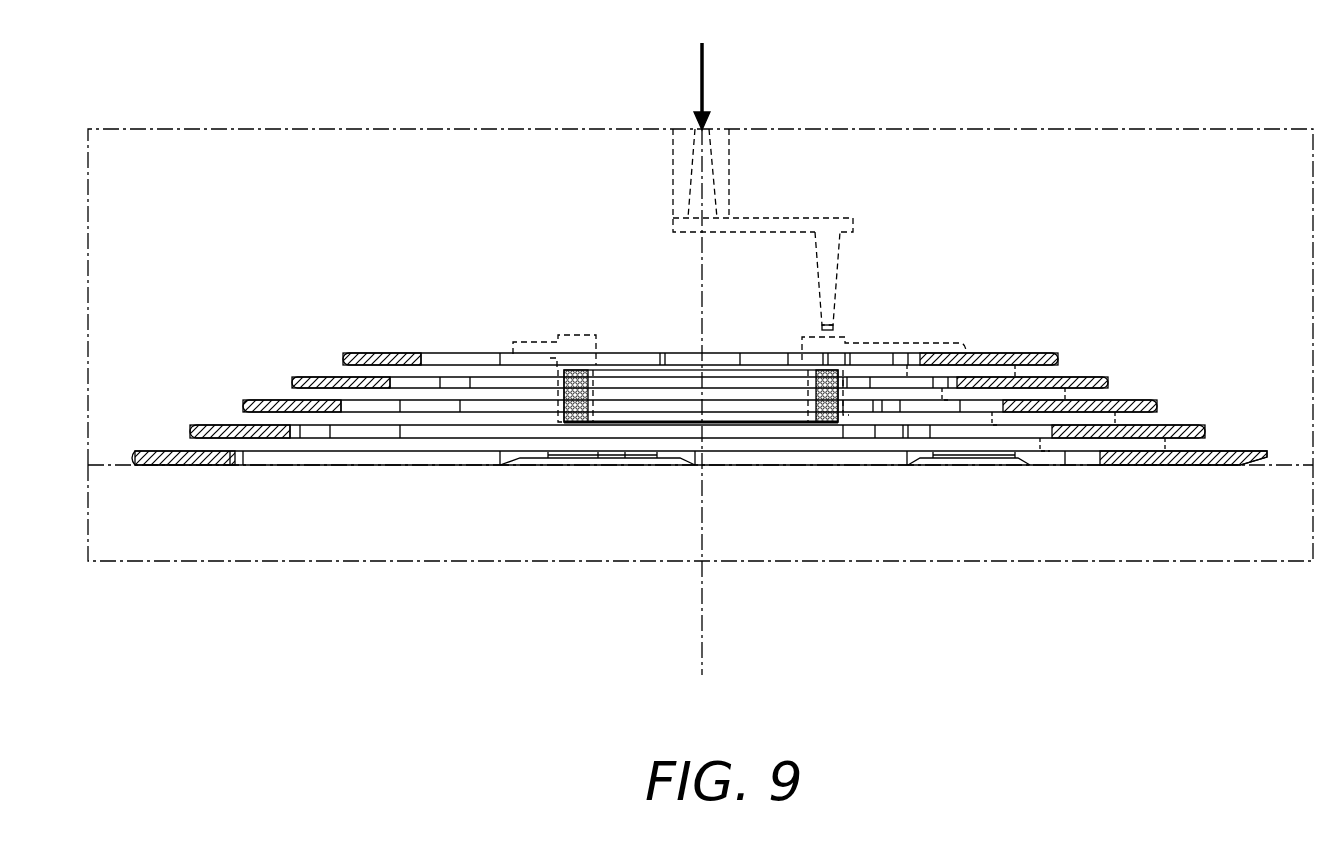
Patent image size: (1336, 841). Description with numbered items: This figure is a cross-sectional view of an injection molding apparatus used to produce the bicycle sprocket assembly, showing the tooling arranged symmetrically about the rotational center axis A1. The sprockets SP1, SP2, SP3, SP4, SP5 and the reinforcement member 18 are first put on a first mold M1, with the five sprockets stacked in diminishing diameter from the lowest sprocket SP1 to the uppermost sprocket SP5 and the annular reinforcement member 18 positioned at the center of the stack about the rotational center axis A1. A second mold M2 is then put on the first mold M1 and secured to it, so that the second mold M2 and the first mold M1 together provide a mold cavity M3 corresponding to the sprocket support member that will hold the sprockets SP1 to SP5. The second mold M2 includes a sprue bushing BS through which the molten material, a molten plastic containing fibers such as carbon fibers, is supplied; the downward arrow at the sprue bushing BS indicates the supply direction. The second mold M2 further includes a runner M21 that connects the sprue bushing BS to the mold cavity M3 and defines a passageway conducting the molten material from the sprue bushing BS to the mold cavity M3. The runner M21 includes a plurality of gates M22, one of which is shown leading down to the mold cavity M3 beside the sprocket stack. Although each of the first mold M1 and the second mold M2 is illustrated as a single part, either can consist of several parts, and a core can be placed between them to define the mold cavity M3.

The sprue bushing BS is at (729, 170).
The runner M21 is at (786, 232).
The gates M22 is at (835, 327).
The mold cavity M3 is at (596, 343).
The second mold M2 is at (1166, 128).
The first mold M1 is at (1160, 565).
The rotational center axis A1 is at (702, 660).
The reinforcement member 18 is at (825, 432).
The sprocket SP1 is at (1243, 449).
The sprocket SP2 is at (1204, 424).
The sprocket SP3 is at (1157, 398).
The sprocket SP4 is at (1110, 374).
The sprocket SP5 is at (1060, 350).